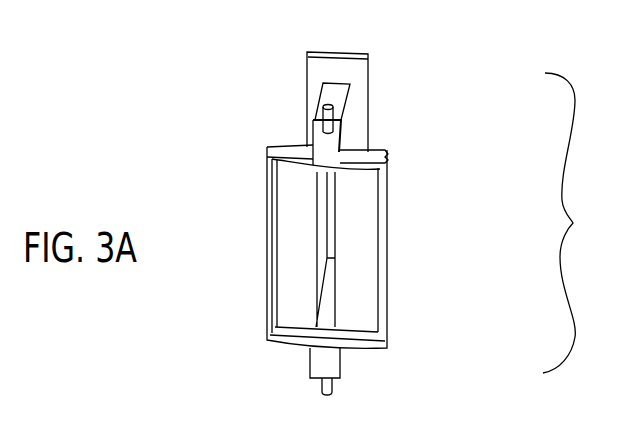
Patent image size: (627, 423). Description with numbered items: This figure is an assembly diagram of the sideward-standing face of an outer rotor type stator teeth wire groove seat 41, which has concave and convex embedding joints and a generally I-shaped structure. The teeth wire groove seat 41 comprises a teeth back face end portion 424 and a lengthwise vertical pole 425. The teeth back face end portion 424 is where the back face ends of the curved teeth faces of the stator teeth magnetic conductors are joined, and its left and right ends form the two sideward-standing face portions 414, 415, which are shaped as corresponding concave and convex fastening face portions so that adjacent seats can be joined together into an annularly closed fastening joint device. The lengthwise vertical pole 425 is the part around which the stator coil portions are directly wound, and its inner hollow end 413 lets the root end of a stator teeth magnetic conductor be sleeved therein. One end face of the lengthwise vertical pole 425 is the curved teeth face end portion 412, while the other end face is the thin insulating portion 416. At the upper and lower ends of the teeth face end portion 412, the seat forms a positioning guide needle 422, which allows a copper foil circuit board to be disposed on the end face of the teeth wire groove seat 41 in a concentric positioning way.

The teeth wire groove seat 41 is at (573, 223).
The curved teeth face end portion 412 is at (325, 348).
The inner hollow end 413 is at (332, 208).
The sideward-standing face portion 414 is at (388, 155).
The sideward-standing face portion 415 is at (268, 150).
The thin insulating portion 416 is at (347, 68).
The positioning guide needle 422 is at (328, 117).
The teeth back face end portion 424 is at (363, 270).
The lengthwise vertical pole 425 is at (335, 97).